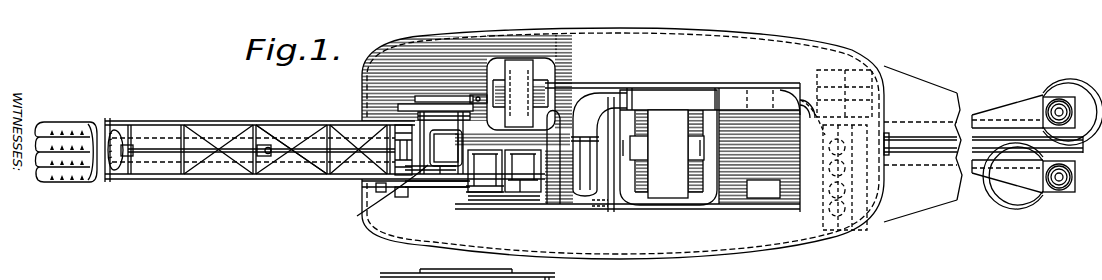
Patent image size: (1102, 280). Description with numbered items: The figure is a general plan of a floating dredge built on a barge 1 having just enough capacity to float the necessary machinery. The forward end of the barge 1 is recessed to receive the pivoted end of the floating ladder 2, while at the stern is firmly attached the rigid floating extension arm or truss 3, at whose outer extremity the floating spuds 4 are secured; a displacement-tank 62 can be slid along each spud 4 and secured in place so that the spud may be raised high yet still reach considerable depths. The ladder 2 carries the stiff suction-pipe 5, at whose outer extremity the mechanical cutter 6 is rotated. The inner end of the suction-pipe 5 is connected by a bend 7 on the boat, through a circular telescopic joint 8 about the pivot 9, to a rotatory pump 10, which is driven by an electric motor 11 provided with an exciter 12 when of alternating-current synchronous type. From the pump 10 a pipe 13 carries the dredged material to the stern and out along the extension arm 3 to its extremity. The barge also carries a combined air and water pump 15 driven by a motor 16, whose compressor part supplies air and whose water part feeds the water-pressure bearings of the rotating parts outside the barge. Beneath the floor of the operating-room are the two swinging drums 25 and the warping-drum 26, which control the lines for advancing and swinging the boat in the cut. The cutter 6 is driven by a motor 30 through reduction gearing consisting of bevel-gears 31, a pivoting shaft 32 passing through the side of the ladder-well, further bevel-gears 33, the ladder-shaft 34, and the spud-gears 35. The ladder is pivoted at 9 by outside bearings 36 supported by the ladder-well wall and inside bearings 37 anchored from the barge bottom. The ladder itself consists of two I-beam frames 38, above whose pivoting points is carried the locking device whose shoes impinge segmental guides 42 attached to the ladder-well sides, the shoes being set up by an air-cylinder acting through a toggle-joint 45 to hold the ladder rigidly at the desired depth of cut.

The barge 1 is at (623, 143).
The floating ladder 2 is at (325, 141).
The rigid floating extension arm or truss 3 is at (923, 144).
The floating spud 4 is at (1040, 100).
The suction-pipe 5 is at (168, 168).
The mechanical cutter 6 is at (66, 140).
The bend 7 is at (549, 177).
The circular telescopic joint 8 is at (452, 166).
The pivot 9 is at (445, 172).
The rotatory pump 10 is at (576, 150).
The electric motor 11 is at (668, 154).
The exciter 12 is at (594, 204).
The pipe 13 is at (710, 147).
The combined air and water pump 15 is at (823, 205).
The motor 16 is at (817, 75).
The swinging drum 25 is at (503, 175).
The warping-drum 26 is at (523, 171).
The motor 30 is at (521, 94).
The bevel-gears 31 is at (422, 105).
The pivoting shaft 32 is at (418, 181).
The bevel-gears 33 is at (446, 148).
The ladder-shaft 34 is at (313, 150).
The spud-gears 35 is at (117, 135).
The outside bearings 36 is at (475, 98).
The inside bearings 37 is at (433, 98).
The I-beam frame 38 is at (458, 190).
The segmental guide 42 is at (379, 197).
The toggle-joint 45 is at (397, 145).
The displacement-tank 62 is at (1058, 96).